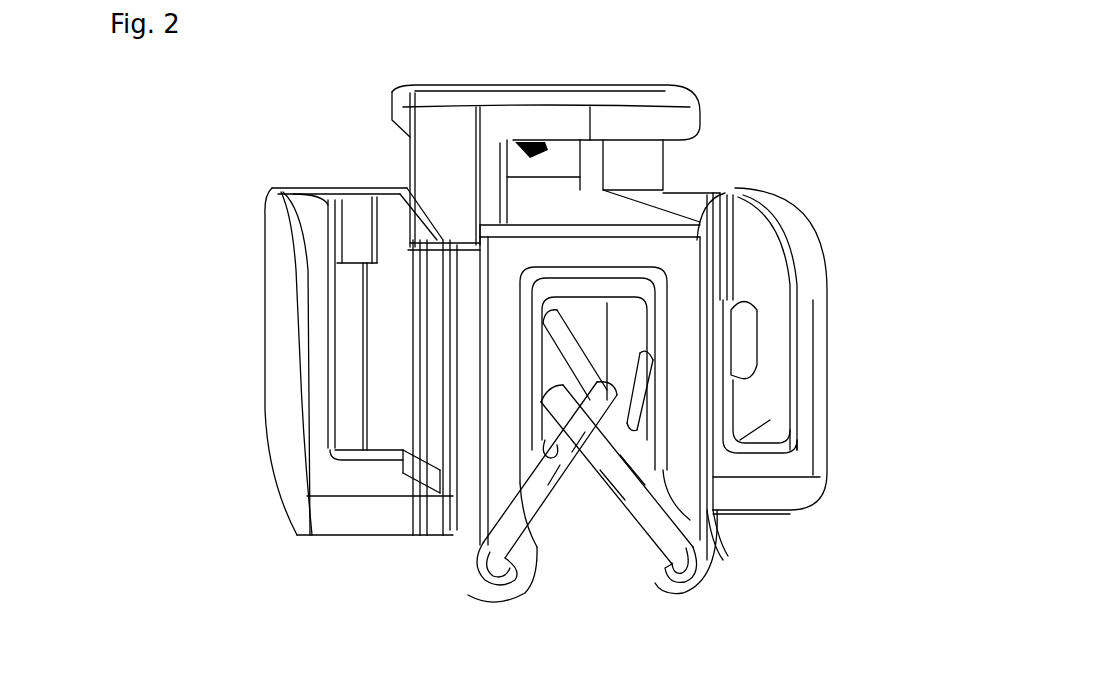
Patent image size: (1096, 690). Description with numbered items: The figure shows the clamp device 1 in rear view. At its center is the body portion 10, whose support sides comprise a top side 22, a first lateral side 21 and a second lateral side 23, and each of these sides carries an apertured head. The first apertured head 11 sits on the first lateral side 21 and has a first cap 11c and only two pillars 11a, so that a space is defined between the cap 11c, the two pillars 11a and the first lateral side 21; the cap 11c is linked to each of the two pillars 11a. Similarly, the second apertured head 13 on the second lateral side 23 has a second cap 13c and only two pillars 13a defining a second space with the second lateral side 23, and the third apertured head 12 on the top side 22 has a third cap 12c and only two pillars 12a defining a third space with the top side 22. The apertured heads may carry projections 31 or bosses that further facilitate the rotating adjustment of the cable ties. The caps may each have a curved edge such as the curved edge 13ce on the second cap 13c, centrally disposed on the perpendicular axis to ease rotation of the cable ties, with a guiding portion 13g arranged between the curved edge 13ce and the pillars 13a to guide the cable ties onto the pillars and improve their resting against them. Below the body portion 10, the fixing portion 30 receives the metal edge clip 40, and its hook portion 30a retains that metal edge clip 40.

The clamp device 1 is at (318, 155).
The body portion 10 is at (490, 410).
The first apertured head 11 is at (805, 257).
The first pillars 11a is at (642, 218).
The first cap 11c is at (805, 377).
The third apertured head 12 is at (607, 93).
The third pillars 12a is at (440, 173).
The third cap 12c is at (493, 100).
The second apertured head 13 is at (280, 346).
The second pillars 13a is at (343, 232).
The second cap 13c is at (323, 443).
The curved edge 13ce is at (310, 297).
The guiding portion 13g is at (283, 190).
The first lateral side 21 is at (695, 412).
The top side 22 is at (700, 195).
The second lateral side 23 is at (460, 420).
The fixing portion 30 is at (498, 483).
The hook portion 30a is at (680, 578).
The projections 31 is at (547, 157).
The metal edge clip 40 is at (657, 517).